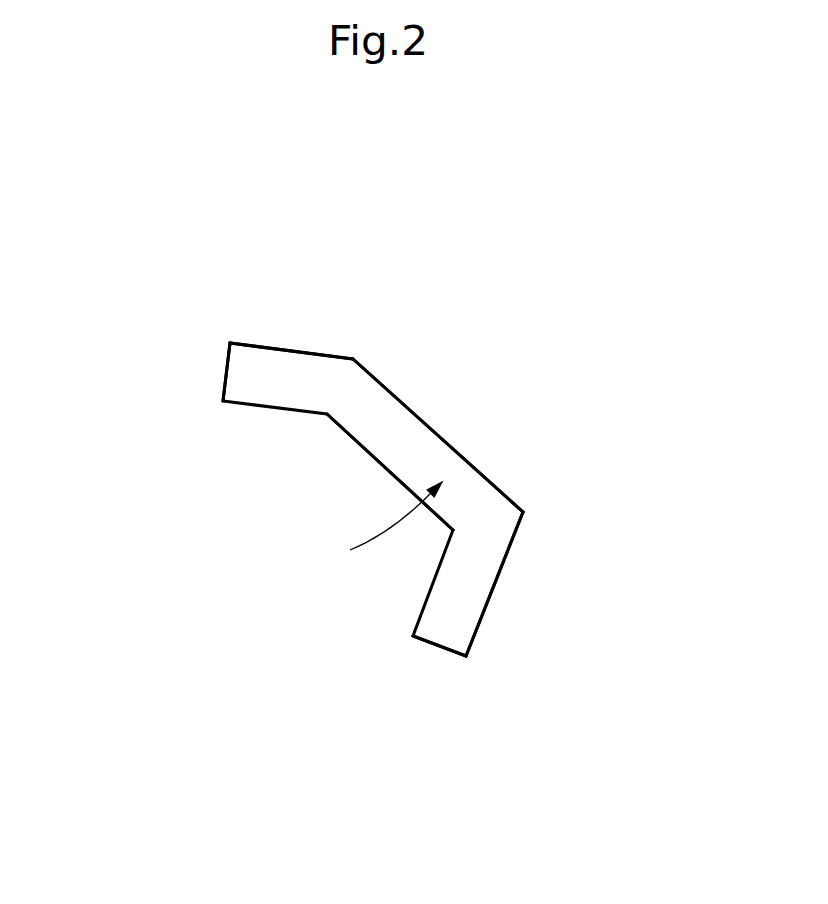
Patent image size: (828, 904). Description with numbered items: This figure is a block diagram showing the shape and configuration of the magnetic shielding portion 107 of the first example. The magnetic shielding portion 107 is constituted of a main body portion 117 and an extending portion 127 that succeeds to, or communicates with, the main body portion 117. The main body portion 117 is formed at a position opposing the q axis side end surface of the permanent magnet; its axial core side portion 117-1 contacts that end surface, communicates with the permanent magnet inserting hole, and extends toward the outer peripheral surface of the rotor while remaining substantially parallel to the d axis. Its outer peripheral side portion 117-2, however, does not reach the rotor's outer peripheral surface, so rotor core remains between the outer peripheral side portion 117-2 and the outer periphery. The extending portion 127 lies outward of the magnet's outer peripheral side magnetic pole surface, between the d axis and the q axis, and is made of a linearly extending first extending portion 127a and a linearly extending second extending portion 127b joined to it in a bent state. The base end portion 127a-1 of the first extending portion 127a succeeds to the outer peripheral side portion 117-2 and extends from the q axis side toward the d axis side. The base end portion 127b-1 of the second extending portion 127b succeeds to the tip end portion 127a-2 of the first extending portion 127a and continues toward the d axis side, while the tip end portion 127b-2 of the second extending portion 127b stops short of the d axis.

The extending portion 127 is at (600, 395).
The first extending portion 127a is at (526, 503).
The second extending portion 127b is at (359, 346).
The base end portion of the first extending portion 127a-1 is at (479, 508).
The tip end portion of the first extending portion 127a-2 is at (358, 407).
The base end portion of the second extending portion 127b-1 is at (323, 388).
The tip end portion of the second extending portion 127b-2 is at (235, 374).
The main body portion 117 is at (531, 512).
The axial core side portion of the main body portion 117-1 is at (442, 637).
The outer peripheral side portion of the main body portion 117-2 is at (485, 544).
The magnetic shielding portion 107 is at (375, 525).